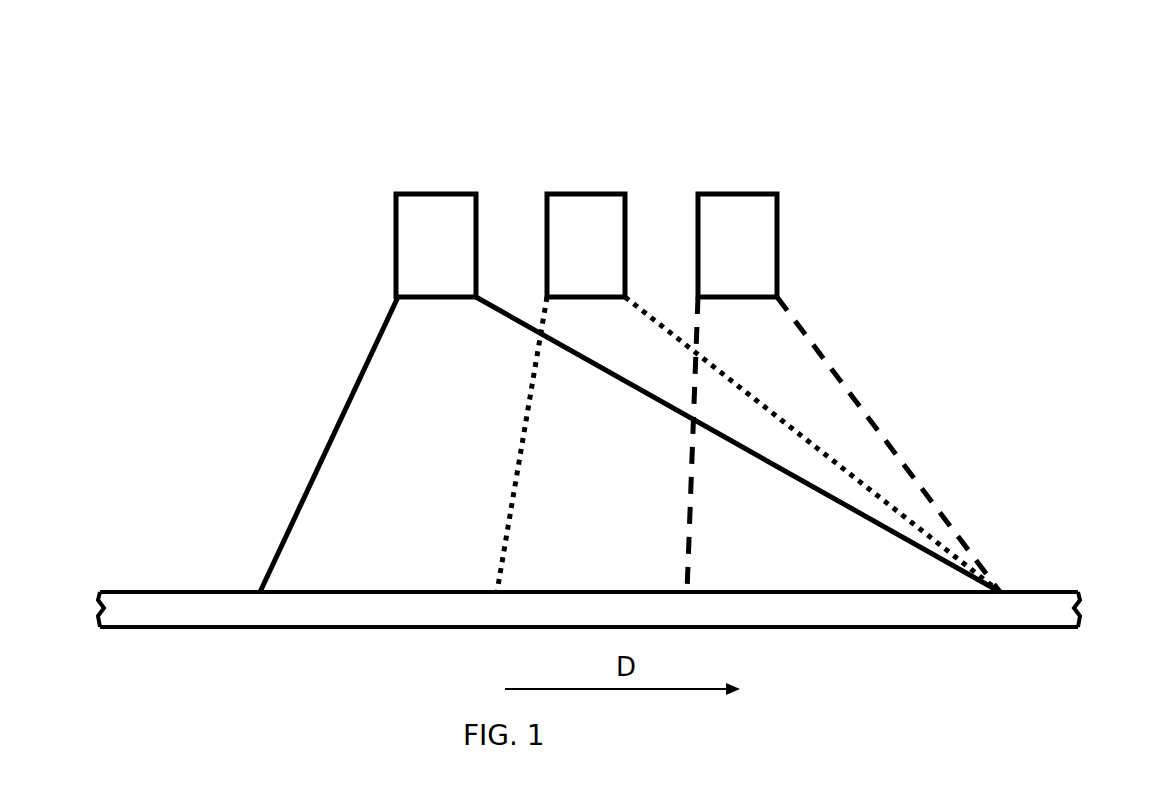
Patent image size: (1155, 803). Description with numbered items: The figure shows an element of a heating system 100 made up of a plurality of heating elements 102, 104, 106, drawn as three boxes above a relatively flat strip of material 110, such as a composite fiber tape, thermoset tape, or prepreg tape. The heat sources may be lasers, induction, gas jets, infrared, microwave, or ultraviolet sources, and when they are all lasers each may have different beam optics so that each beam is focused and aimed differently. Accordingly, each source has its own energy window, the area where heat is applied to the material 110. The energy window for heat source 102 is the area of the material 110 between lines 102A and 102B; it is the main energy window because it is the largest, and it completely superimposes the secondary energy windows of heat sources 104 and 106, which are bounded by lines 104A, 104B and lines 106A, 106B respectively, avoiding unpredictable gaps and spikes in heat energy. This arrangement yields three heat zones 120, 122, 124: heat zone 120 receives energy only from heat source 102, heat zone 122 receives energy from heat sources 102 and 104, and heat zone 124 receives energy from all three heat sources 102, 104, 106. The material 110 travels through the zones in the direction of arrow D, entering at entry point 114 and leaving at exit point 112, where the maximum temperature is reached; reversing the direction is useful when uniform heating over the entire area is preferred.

The heating system 100 is at (262, 82).
The heating element 102 is at (432, 215).
The heating element 104 is at (593, 215).
The heating element 106 is at (745, 215).
The line 102A is at (370, 350).
The line 102B is at (798, 470).
The line 104A is at (525, 440).
The line 104B is at (740, 390).
The line 106A is at (693, 475).
The line 106B is at (912, 480).
The material 110 is at (192, 612).
The exit point 112 is at (1022, 590).
The entry point 114 is at (248, 590).
The heat zone 120 is at (388, 535).
The heat zone 122 is at (596, 525).
The heat zone 124 is at (781, 545).